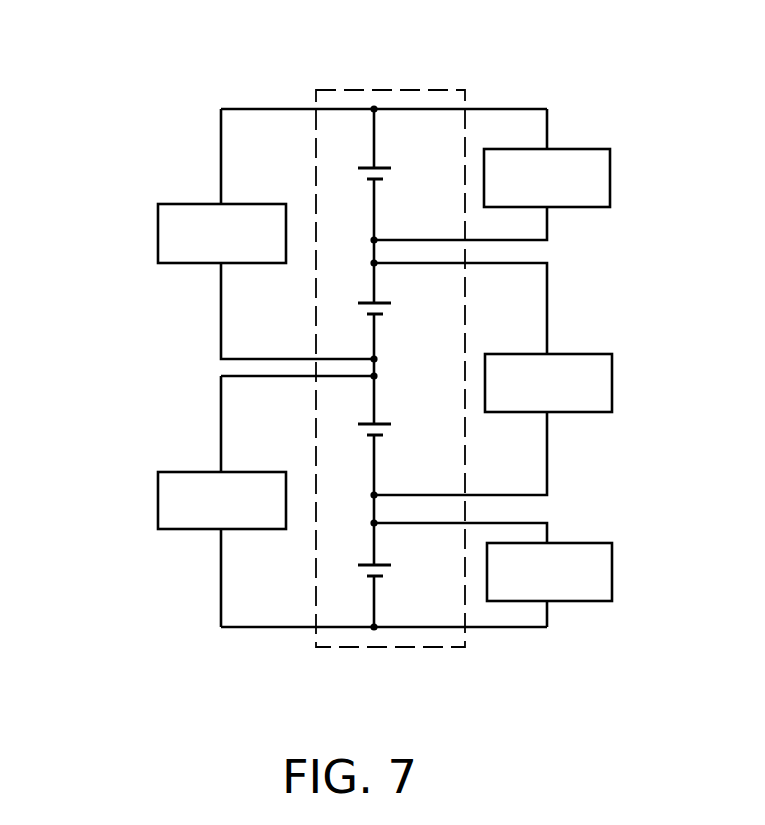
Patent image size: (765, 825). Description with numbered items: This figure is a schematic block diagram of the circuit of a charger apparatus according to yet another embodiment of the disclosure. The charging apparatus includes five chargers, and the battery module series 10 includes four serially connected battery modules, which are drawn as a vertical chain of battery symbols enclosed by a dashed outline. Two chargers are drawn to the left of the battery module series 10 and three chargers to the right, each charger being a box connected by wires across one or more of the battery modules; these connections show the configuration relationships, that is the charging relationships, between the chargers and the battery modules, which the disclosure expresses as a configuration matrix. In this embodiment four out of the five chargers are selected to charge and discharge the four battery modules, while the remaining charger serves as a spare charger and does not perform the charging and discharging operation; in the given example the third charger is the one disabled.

The battery module series 10 is at (418, 90).